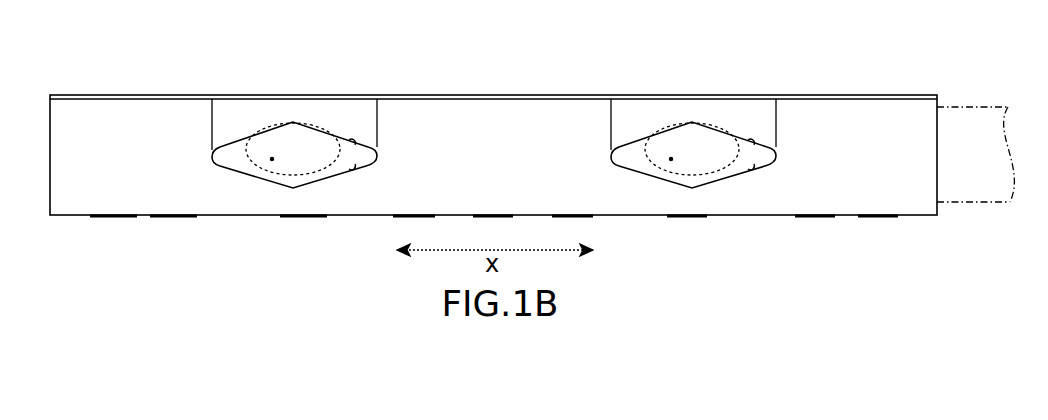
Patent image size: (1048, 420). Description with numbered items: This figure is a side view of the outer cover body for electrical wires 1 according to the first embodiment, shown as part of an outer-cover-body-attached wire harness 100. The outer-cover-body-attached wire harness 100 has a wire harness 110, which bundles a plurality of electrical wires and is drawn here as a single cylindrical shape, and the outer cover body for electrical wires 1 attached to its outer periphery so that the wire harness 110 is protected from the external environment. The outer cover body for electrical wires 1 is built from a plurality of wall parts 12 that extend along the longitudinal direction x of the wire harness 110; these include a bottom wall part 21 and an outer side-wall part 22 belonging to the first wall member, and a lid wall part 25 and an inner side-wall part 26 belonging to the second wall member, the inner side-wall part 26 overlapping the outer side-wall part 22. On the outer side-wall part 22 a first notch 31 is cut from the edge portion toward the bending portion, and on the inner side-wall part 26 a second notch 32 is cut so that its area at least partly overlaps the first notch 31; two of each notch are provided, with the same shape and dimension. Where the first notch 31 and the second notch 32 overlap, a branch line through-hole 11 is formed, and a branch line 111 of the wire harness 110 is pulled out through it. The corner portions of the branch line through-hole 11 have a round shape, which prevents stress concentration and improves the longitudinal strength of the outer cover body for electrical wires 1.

The outer cover body for electrical wires 1 is at (842, 80).
The outer-cover-body-attached wire harness 100 is at (948, 70).
The wire harness 110 is at (953, 100).
The branch line through-hole 11 is at (272, 157).
The wall part 12 is at (798, 93).
The bottom wall part 21 is at (212, 216).
The outer side-wall part 22 is at (146, 179).
The lid wall part 25 is at (147, 94).
The inner side-wall part 26 is at (239, 126).
The first notch 31 is at (359, 171).
The second notch 32 is at (353, 140).
The branch line 111 is at (247, 177).